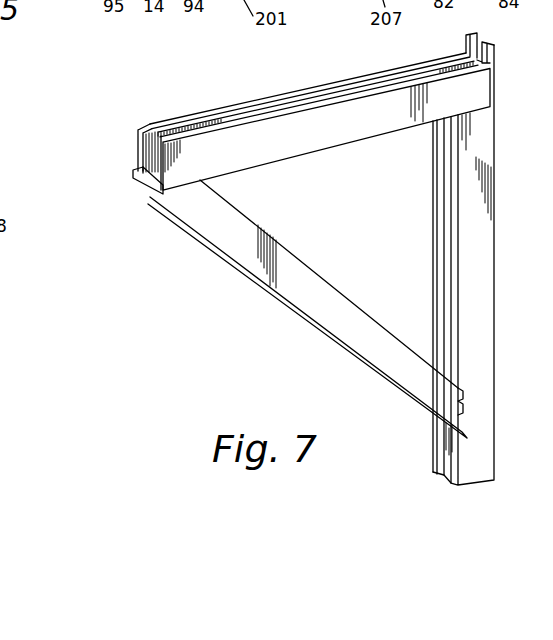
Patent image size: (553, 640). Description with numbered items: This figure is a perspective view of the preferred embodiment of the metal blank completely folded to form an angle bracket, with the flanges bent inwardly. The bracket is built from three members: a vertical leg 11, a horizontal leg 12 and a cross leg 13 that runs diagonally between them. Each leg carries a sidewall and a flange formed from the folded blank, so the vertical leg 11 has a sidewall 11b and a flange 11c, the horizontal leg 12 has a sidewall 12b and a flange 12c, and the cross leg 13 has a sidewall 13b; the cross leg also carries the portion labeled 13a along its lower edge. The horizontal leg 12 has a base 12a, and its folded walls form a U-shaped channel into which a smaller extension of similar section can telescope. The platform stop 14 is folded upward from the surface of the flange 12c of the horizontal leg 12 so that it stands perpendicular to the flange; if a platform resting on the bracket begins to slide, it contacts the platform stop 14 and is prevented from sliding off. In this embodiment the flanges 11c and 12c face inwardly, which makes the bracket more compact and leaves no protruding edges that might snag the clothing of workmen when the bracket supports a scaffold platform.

The vertical leg 11 is at (500, 218).
The sidewall 11b is at (483, 250).
The flange 11c is at (446, 196).
The horizontal leg 12 is at (282, 92).
The base 12a is at (139, 156).
The sidewall 12b is at (279, 135).
The flange 12c is at (228, 118).
The cross leg 13 is at (270, 308).
The flange of brace 13a is at (198, 232).
The sidewall 13b is at (277, 251).
The platform stop 14 is at (490, 53).